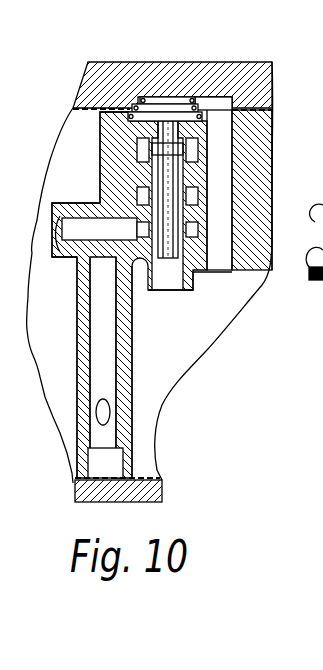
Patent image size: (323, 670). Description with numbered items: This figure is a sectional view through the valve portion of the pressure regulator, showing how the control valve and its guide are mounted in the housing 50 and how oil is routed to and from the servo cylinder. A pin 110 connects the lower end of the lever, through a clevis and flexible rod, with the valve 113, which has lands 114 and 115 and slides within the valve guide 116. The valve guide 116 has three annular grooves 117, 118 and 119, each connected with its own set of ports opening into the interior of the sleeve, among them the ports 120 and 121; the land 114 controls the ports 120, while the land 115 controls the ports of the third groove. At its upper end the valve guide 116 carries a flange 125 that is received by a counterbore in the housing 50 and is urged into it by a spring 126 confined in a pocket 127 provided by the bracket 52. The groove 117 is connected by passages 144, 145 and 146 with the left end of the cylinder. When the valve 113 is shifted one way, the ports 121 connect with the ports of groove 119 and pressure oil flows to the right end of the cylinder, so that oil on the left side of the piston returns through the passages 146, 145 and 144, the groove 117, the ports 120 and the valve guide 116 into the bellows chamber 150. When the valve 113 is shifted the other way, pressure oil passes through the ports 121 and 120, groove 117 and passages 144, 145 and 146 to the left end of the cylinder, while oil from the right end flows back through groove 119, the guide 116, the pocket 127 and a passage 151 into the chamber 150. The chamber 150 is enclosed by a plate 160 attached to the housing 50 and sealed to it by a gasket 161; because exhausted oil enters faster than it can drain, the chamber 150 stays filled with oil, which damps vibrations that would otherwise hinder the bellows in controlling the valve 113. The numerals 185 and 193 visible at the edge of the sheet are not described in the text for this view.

The bracket 52 is at (135, 63).
The housing 50 is at (100, 169).
The annular groove 118 is at (110, 190).
The passage 144 is at (76, 245).
The annular groove 117 is at (140, 230).
The passage 145 is at (92, 333).
The passage 146 is at (103, 413).
The gasket 161 is at (76, 479).
The plate 160 is at (76, 497).
The flange 125 is at (212, 140).
The land 115 is at (210, 133).
The pin 110 is at (172, 140).
The pocket 127 is at (198, 96).
The spring 126 is at (162, 97).
The passage 151 is at (220, 160).
The land 114 is at (272, 207).
The annular groove 119 is at (112, 142).
The ports 121 is at (188, 197).
The ports 120 is at (190, 228).
The valve guide 116 is at (193, 286).
The valve 113 is at (167, 292).
The bellows chamber 150 is at (193, 350).
The adjacent part 185 is at (322, 193).
The adjacent part 193 is at (322, 230).